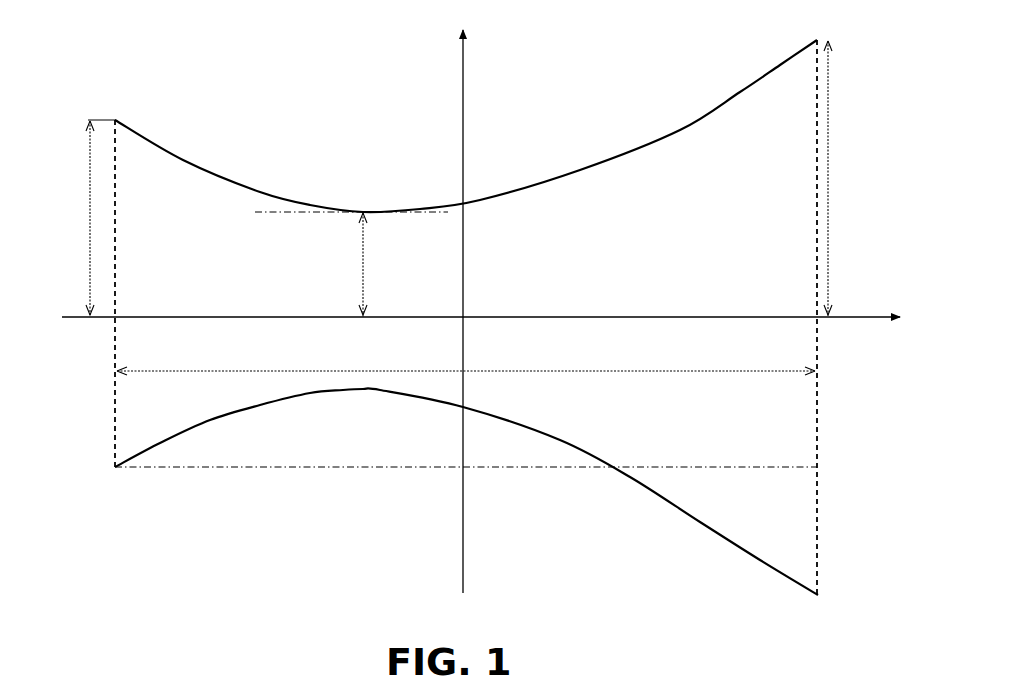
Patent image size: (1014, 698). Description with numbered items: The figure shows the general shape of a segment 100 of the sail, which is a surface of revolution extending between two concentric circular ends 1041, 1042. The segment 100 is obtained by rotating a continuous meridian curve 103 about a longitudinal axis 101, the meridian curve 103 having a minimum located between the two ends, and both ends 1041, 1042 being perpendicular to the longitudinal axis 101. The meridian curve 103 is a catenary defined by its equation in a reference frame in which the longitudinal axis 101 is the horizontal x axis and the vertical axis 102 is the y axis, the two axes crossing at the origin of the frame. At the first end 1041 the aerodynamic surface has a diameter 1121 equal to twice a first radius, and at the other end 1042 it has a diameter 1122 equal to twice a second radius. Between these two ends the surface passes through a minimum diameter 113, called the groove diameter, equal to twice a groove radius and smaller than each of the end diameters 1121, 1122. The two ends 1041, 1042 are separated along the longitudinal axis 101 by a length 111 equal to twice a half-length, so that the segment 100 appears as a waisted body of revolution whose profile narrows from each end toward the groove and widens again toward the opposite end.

The segment of the sail 100 is at (392, 522).
The longitudinal axis 101 is at (857, 320).
The vertical axis 102 is at (463, 84).
The meridian curve 103 is at (184, 158).
The first circular end 1041 is at (115, 218).
The second circular end 1042 is at (817, 170).
The length 2h 111 is at (516, 371).
The diameter 2r1 1121 is at (90, 193).
The diameter 2r2 1122 is at (870, 140).
The minimum diameter 2r0 113 is at (363, 248).